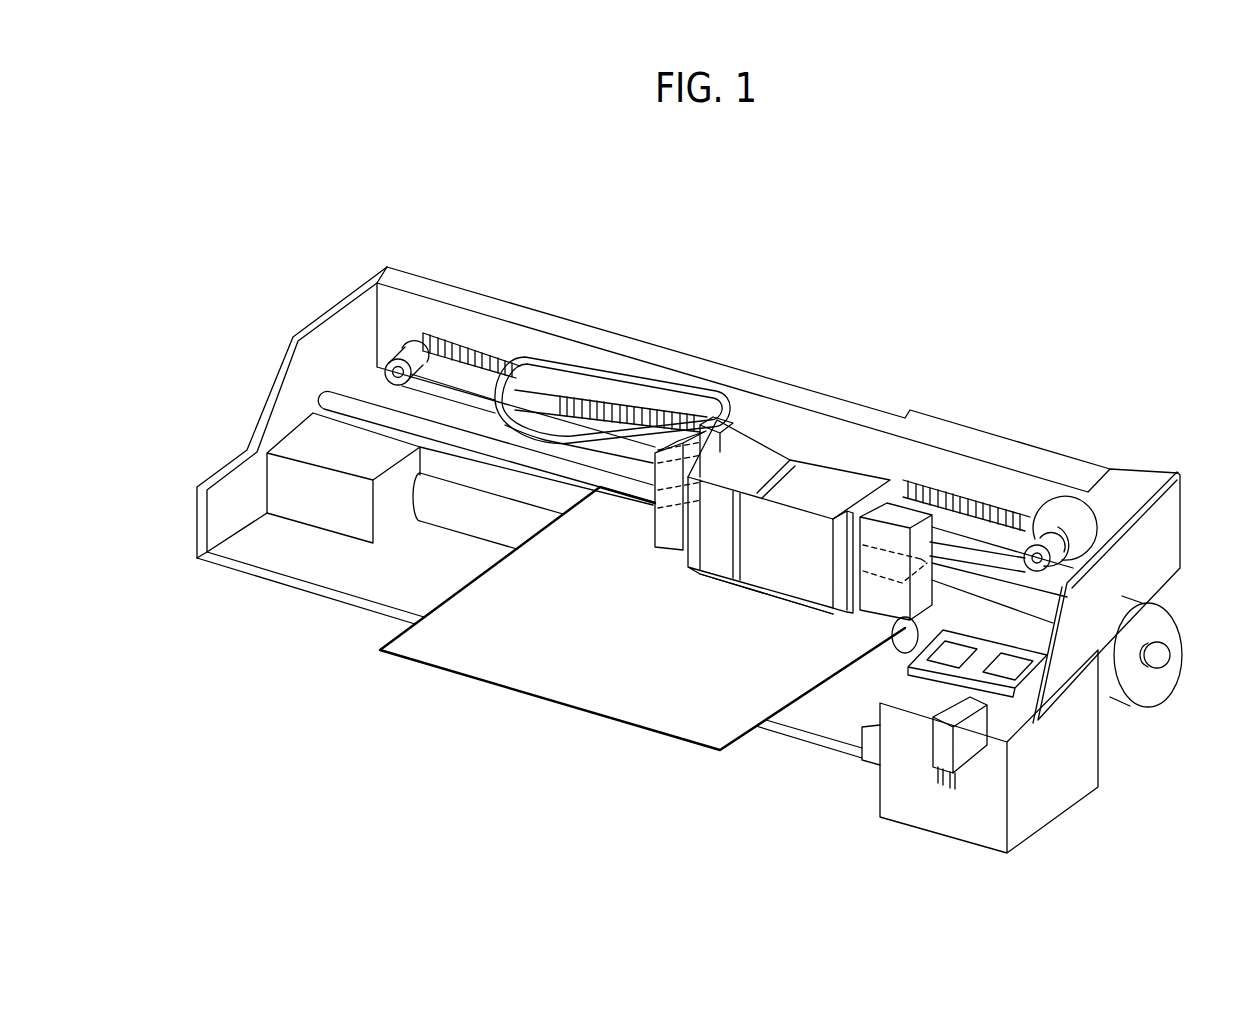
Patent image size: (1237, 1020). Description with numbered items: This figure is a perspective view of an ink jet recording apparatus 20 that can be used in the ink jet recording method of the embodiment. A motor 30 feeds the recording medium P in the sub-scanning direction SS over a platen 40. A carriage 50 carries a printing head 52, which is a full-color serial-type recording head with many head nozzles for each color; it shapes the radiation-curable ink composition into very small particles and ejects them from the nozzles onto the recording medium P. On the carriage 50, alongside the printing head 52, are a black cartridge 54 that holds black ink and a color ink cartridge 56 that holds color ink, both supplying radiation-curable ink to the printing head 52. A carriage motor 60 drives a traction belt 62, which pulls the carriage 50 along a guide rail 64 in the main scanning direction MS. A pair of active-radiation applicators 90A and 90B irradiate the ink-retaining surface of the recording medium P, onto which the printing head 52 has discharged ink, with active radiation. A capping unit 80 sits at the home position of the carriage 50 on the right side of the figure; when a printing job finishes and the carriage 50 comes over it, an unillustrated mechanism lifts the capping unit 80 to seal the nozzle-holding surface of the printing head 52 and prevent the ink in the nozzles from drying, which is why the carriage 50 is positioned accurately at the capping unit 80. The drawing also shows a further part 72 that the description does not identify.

The ink jet recording apparatus 20 is at (690, 207).
The motor 30 is at (1160, 667).
The platen 40 is at (437, 503).
The carriage 50 is at (742, 596).
The printing head 52 is at (807, 608).
The black cartridge 54 is at (764, 448).
The color ink cartridge 56 is at (838, 485).
The carriage motor 60 is at (1073, 510).
The traction belt 62 is at (427, 362).
The guide rail 64 is at (338, 390).
The timing belt 72 is at (476, 350).
The capping unit 80 is at (987, 647).
The active-radiation applicator 90A is at (648, 520).
The active-radiation applicator 90B is at (888, 597).
The recording medium P is at (700, 720).
The sub-scanning direction SS is at (542, 712).
The main scanning direction MS is at (617, 568).